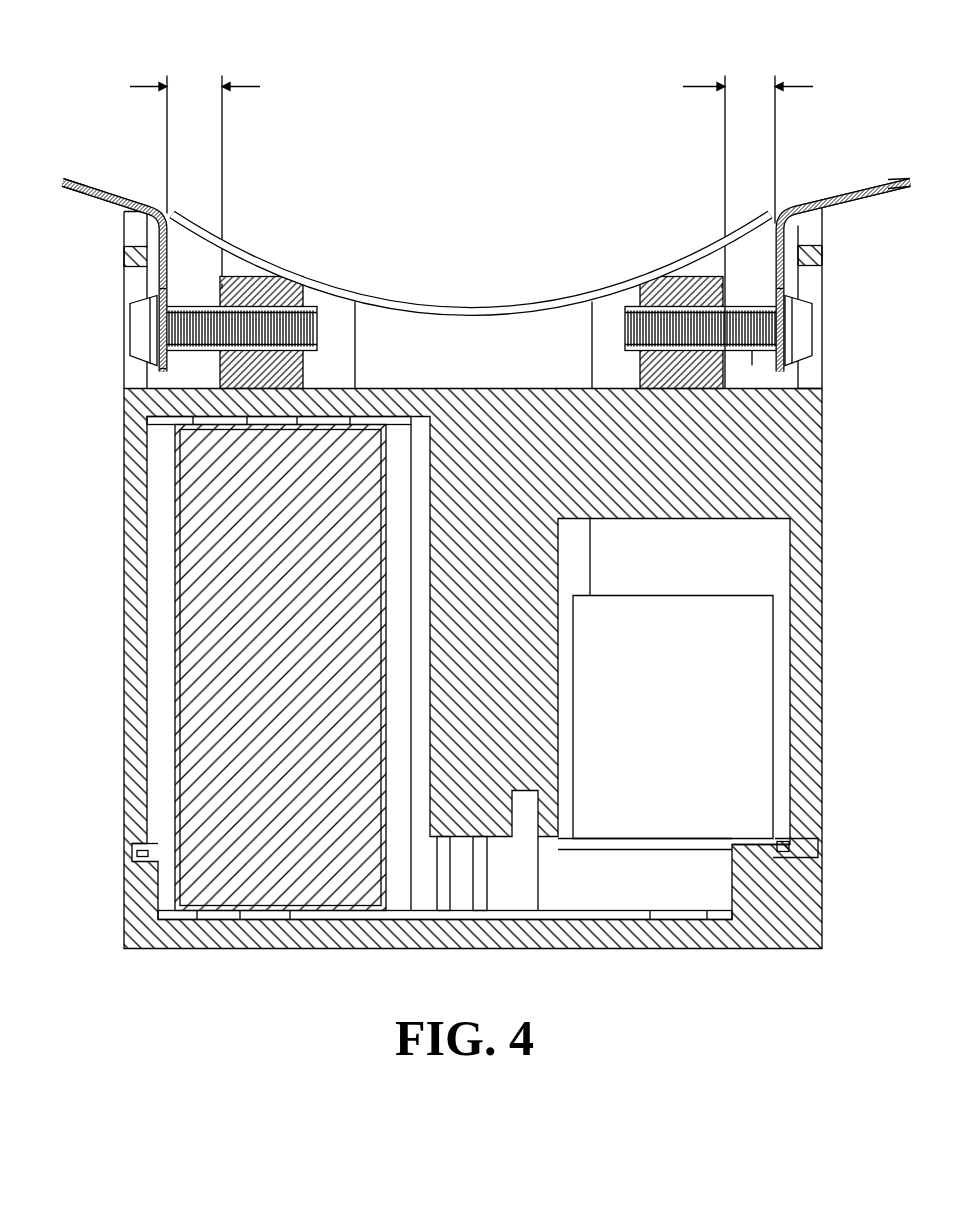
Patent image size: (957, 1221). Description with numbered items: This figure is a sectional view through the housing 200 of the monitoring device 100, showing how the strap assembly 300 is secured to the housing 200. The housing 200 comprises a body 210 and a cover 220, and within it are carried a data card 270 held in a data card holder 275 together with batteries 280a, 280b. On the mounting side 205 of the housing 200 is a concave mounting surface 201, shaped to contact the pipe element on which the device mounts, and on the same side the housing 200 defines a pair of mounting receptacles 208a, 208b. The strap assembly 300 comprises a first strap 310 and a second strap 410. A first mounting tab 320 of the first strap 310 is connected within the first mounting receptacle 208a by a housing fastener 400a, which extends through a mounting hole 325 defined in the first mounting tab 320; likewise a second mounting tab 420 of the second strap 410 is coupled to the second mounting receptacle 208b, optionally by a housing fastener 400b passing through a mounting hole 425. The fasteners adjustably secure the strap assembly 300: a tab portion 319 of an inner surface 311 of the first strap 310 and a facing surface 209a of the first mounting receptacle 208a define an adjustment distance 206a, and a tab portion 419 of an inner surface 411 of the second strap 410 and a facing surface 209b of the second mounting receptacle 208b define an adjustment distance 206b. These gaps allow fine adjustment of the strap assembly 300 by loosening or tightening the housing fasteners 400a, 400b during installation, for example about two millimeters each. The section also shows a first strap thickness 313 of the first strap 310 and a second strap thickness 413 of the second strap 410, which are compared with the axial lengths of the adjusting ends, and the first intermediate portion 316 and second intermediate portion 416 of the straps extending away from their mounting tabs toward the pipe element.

The monitoring device 100 is at (465, 514).
The housing 200 is at (460, 611).
The mounting surface 201 is at (443, 303).
The mounting side 205 is at (538, 300).
The adjustment distance 206a is at (753, 95).
The adjustment distance 206b is at (188, 92).
The first mounting receptacle 208a is at (722, 288).
The second mounting receptacle 208b is at (222, 285).
The facing surface 209a is at (724, 358).
The facing surface 209b is at (218, 358).
The body 210 is at (122, 555).
The cover 220 is at (122, 897).
The data card 270 is at (677, 851).
The data card holder 275 is at (737, 714).
The battery 280a is at (595, 890).
The battery 280b is at (160, 758).
The strap assembly 300 is at (122, 216).
The first strap 310 is at (835, 198).
The inner surface 311 is at (850, 187).
The first strap thickness 313 is at (893, 163).
The first intermediate portion 316 is at (862, 198).
The tab portion 319 is at (735, 293).
The first mounting tab 320 is at (778, 235).
The mounting hole 325 is at (755, 365).
The housing fastener 400a is at (800, 325).
The housing fastener 400b is at (142, 333).
The second strap 410 is at (123, 207).
The inner surface 411 is at (100, 190).
The second strap thickness 413 is at (52, 150).
The second intermediate portion 416 is at (80, 196).
The tab portion 419 is at (180, 298).
The second mounting tab 420 is at (163, 235).
The mounting hole 425 is at (176, 352).